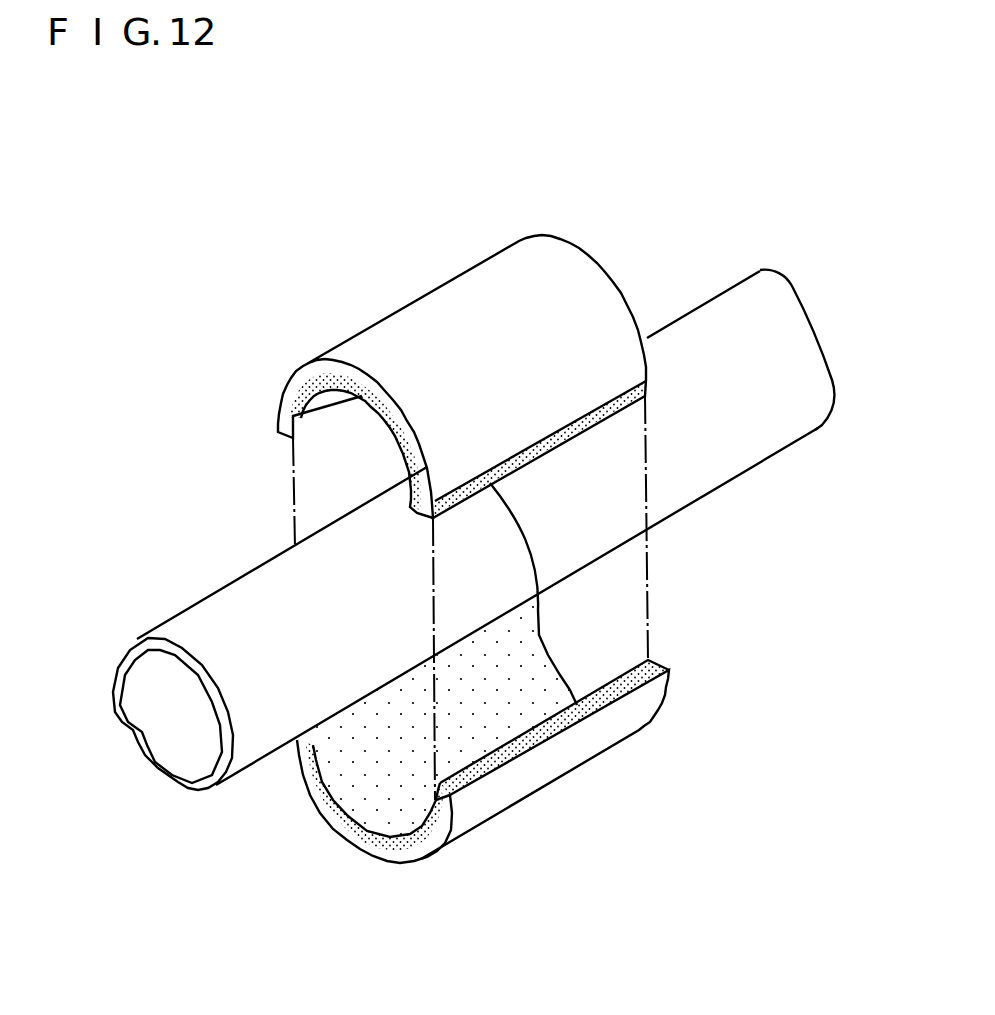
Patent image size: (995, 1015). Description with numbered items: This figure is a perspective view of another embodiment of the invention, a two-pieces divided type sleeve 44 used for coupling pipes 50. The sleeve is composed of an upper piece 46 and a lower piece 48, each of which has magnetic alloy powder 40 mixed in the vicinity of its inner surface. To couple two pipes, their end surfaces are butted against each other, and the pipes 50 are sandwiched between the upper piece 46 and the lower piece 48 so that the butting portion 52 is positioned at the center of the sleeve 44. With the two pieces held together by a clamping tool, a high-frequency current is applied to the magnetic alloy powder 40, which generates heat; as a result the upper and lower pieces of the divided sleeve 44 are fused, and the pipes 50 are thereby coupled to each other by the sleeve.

The magnetic alloy powder 40 is at (490, 763).
The two-pieces divided type sleeve 44 is at (246, 379).
The upper piece 46 is at (590, 299).
The lower piece 48 is at (638, 708).
The pipes 50 is at (777, 308).
The butting portion 52 is at (522, 527).